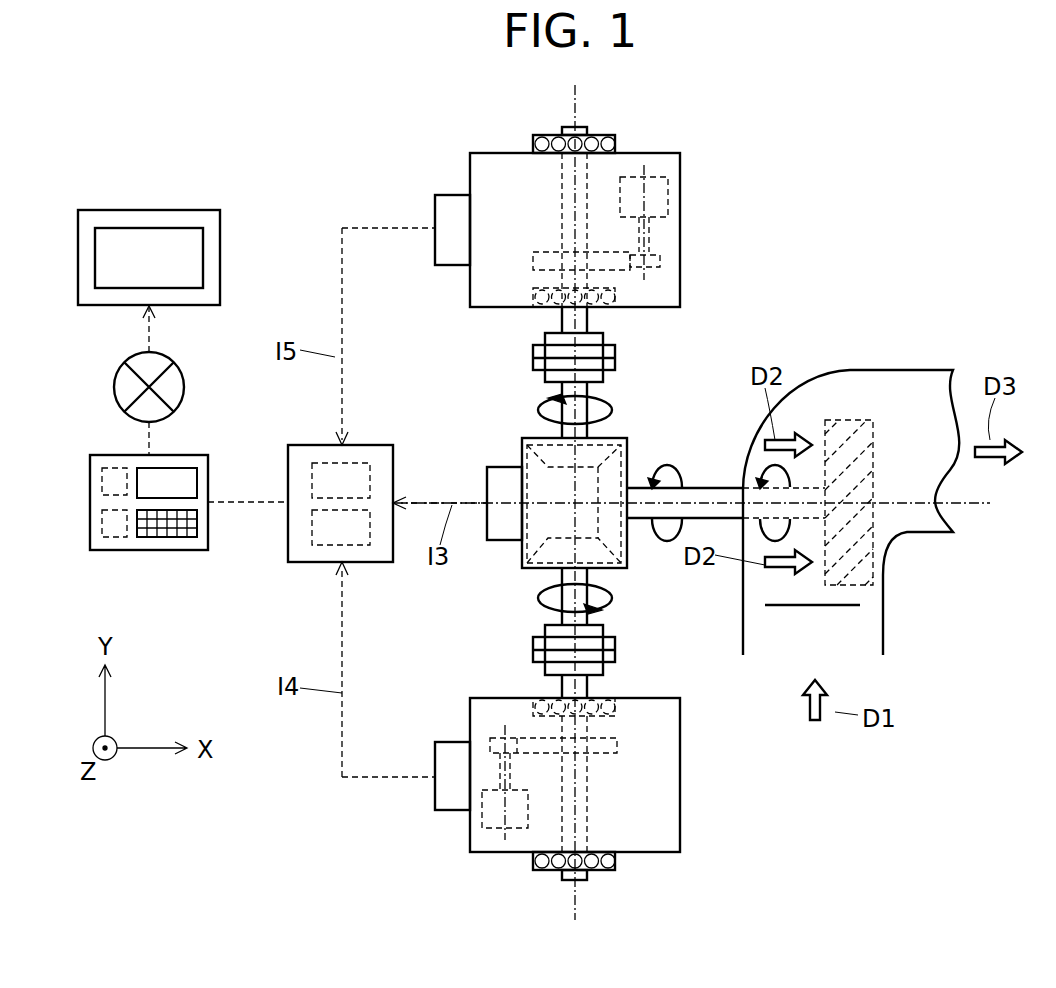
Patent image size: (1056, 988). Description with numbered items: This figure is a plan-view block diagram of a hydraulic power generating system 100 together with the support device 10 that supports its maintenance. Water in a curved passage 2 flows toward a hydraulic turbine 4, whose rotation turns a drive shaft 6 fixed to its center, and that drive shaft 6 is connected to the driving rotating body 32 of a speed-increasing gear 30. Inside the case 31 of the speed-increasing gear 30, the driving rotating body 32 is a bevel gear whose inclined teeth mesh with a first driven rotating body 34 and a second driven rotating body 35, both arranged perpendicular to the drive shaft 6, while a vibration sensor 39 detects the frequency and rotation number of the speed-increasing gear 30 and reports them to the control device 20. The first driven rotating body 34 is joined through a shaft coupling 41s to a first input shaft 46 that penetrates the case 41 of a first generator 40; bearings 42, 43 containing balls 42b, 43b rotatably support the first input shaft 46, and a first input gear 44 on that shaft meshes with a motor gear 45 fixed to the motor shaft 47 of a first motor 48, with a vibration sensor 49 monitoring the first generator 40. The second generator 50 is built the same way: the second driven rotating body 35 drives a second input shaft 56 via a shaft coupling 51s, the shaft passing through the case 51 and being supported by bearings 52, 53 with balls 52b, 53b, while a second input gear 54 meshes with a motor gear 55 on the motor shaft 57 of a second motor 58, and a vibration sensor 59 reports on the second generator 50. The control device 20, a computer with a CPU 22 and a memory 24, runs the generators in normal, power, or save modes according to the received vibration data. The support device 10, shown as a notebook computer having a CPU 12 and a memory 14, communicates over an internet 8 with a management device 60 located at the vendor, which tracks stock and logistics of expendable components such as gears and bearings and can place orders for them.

The hydraulic power generating system 100 is at (847, 196).
The passage 2 is at (905, 370).
The hydraulic turbine 4 is at (873, 565).
The drive shaft 6 is at (720, 488).
The internet 8 is at (114, 387).
The support device 10 is at (124, 538).
The CPU 12 is at (102, 480).
The memory 14 is at (102, 528).
The control device 20 is at (310, 539).
The CPU 22 is at (312, 478).
The memory 24 is at (312, 530).
The speed-increasing gear 30 is at (568, 502).
The case 31 is at (522, 450).
The driving rotating body 32 is at (627, 440).
The first driven rotating body 34 is at (540, 598).
The second driven rotating body 35 is at (540, 412).
The vibration sensor 39 is at (487, 480).
The first generator 40 is at (582, 773).
The case 41 is at (495, 852).
The shaft coupling 41s is at (520, 645).
The bearing 42 is at (636, 681).
The balls 42b is at (600, 698).
The bearing 43 is at (643, 886).
The balls 43b is at (600, 870).
The first input gear 44 is at (617, 745).
The motor gear 45 is at (490, 745).
The first input shaft 46 is at (570, 880).
The motor shaft 47 is at (500, 770).
The first motor 48 is at (482, 815).
The vibration sensor 49 is at (435, 790).
The second generator 50 is at (575, 230).
The case 51 is at (658, 153).
The shaft coupling 51s is at (520, 345).
The bearing 52 is at (642, 323).
The balls 52b is at (600, 308).
The bearing 53 is at (507, 120).
The balls 53b is at (545, 137).
The second input gear 54 is at (533, 262).
The motor gear 55 is at (680, 262).
The second input shaft 56 is at (578, 127).
The motor shaft 57 is at (660, 240).
The second motor 58 is at (670, 200).
The vibration sensor 59 is at (435, 225).
The management device 60 is at (198, 210).